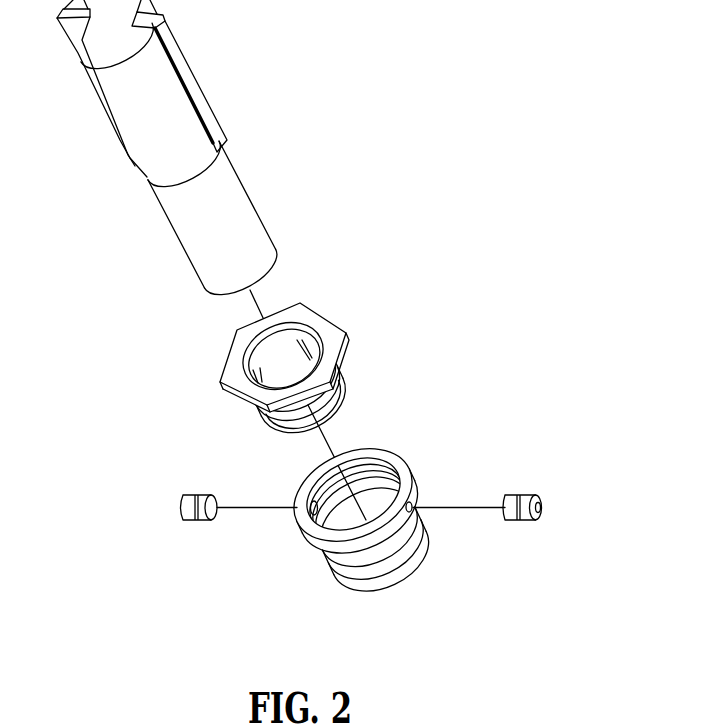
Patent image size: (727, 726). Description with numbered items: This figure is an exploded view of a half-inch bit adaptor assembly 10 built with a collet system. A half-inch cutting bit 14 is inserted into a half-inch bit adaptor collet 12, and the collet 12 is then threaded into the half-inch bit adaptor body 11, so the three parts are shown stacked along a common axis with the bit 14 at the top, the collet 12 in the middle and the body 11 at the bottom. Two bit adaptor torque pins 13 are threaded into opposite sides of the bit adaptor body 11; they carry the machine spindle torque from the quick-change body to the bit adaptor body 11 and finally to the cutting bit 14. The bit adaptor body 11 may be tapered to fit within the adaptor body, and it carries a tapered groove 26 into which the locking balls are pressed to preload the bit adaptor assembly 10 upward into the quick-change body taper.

The bit adaptor assembly 10 is at (287, 165).
The bit adaptor body 11 is at (394, 486).
The bit adaptor collet 12 is at (330, 313).
The bit adaptor torque pins 13 is at (195, 490).
The cutting bit 14 is at (183, 43).
The tapered groove 26 is at (400, 555).